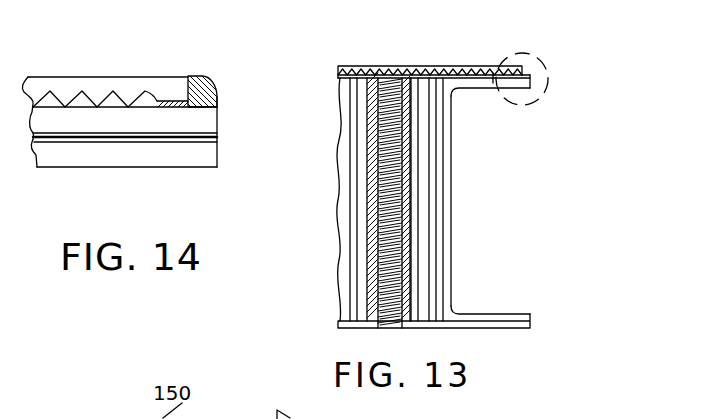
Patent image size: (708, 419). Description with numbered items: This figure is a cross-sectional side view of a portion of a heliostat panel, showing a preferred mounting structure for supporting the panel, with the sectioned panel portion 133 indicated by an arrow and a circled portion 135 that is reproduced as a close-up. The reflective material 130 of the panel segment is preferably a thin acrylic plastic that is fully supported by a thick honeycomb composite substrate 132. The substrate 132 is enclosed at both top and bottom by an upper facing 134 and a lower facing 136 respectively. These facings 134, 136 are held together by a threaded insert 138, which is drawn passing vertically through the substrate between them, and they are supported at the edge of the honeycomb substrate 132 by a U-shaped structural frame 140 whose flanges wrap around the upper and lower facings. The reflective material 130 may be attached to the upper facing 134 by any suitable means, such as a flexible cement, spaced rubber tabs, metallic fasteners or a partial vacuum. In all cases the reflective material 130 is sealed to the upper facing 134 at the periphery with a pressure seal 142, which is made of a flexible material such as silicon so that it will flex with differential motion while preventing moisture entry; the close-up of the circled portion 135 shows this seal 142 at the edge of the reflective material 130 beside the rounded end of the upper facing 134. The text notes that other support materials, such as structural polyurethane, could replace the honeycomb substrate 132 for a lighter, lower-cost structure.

In FIG. 14, the reflective material 130 is at (66, 93).
In FIG. 13, the honeycomb composite substrate 132 is at (430, 158).
In FIG. 13, the wall member 133 is at (321, 289).
In FIG. 13, the upper facing 134 is at (338, 77).
In FIG. 14, the end cap 135 is at (207, 74).
In FIG. 13, the end cap 135 is at (531, 53).
In FIG. 13, the lower facing 136 is at (530, 328).
In FIG. 13, the threaded insert 138 is at (410, 232).
In FIG. 13, the U-shaped structural frame 140 is at (452, 282).
In FIG. 14, the pressure seal 142 is at (173, 101).